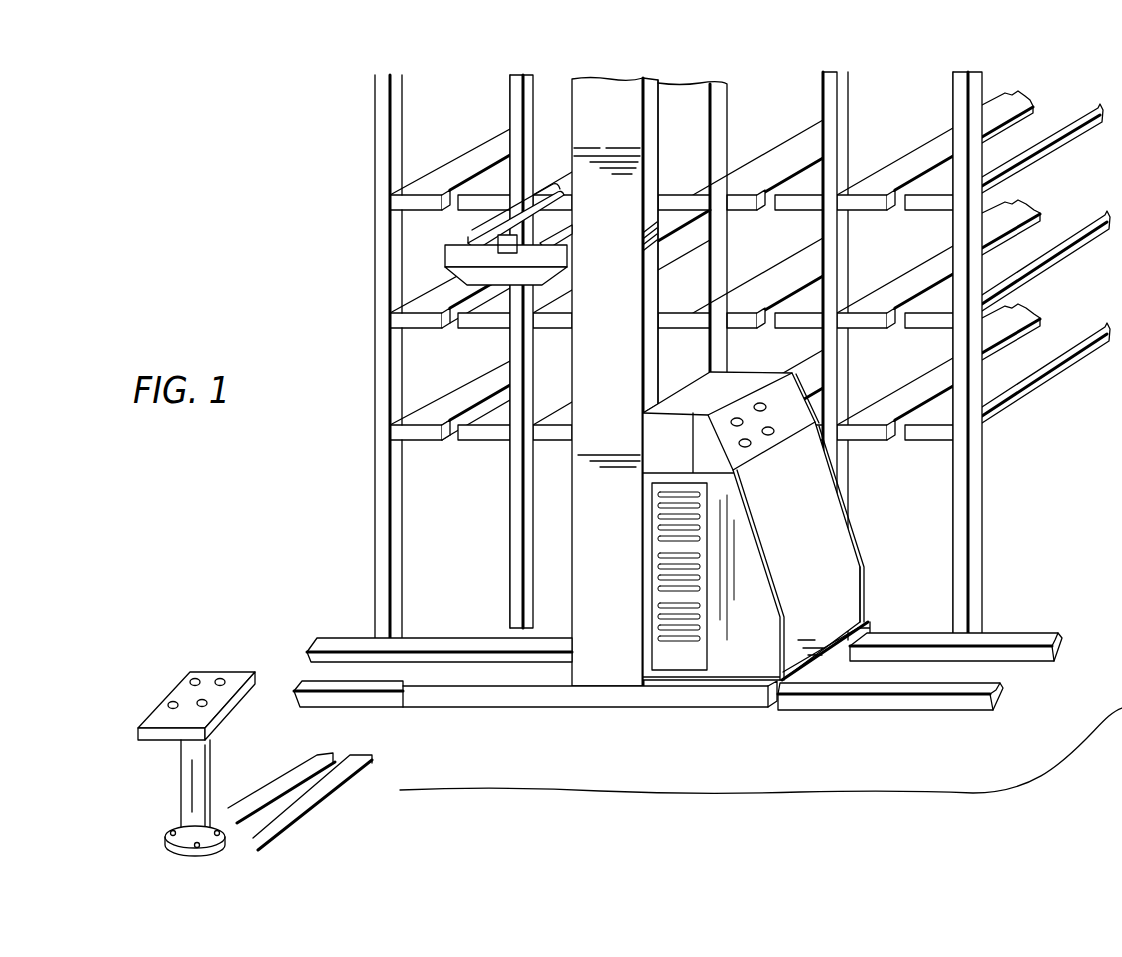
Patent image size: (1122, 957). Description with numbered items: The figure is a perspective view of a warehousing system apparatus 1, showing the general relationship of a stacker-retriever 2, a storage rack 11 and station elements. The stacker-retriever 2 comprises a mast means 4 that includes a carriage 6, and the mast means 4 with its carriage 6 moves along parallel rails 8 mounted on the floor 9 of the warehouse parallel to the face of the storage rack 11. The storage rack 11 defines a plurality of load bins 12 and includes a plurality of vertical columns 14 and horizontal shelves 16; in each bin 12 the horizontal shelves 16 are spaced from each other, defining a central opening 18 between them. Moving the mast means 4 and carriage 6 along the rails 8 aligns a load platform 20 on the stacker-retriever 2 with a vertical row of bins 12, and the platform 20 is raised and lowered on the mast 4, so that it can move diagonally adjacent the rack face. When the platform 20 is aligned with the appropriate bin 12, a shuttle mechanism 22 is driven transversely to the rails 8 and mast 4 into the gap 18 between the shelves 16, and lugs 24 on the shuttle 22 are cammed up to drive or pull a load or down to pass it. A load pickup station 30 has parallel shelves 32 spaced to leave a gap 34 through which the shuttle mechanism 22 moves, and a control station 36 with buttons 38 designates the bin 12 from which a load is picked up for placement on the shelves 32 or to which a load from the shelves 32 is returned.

The warehousing system apparatus 1 is at (690, 730).
The stacker-retriever 2 is at (864, 530).
The mast means 4 is at (611, 299).
The carriage 6 is at (740, 690).
The parallel rails 8 is at (1032, 658).
The floor 9 is at (985, 793).
The storage rack 11 is at (360, 413).
The load bins 12 is at (439, 140).
The vertical columns 14 is at (372, 160).
The horizontal shelves 16 is at (424, 415).
The central opening 18 is at (452, 442).
The load platform 20 is at (445, 254).
The shuttle mechanism 22 is at (504, 262).
The lugs 24 is at (497, 248).
The load pickup station 30 is at (239, 646).
The parallel shelves 32 is at (325, 782).
The gap 34 is at (345, 752).
The control station 36 is at (160, 712).
The buttons 38 is at (194, 676).